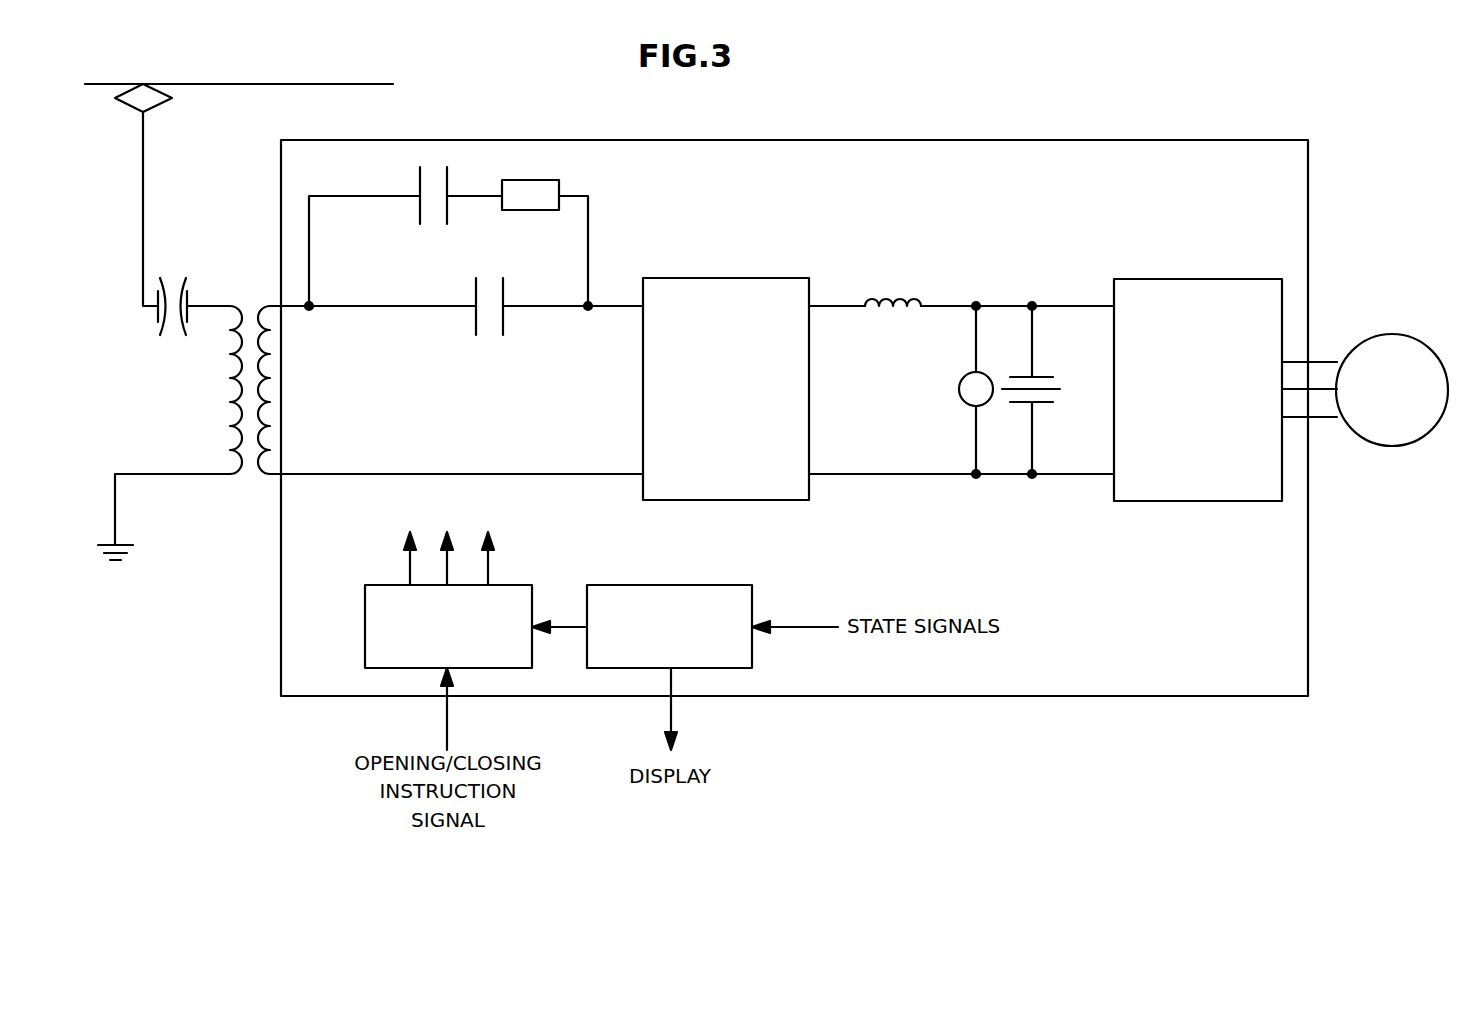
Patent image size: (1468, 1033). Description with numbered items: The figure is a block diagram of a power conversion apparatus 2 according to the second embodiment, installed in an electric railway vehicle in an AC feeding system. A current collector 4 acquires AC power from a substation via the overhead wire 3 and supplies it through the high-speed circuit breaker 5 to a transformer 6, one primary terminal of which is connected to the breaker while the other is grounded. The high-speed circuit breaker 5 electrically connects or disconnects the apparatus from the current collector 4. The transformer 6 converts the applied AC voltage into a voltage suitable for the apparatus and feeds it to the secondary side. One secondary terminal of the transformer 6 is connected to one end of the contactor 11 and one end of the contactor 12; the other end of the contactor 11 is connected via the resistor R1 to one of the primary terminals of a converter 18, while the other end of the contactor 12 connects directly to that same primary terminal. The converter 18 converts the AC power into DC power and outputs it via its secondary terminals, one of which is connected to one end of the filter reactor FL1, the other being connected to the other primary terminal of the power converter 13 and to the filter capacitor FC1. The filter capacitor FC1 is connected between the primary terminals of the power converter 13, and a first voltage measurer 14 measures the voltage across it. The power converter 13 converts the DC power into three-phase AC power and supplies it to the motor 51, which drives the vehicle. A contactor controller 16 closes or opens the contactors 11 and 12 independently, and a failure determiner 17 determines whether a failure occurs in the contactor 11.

The power conversion apparatus 2 is at (760, 140).
The overhead wire 3 is at (366, 85).
The current collector 4 is at (152, 110).
The high-speed circuit breaker 5 is at (157, 320).
The transformer 6 is at (250, 480).
The contactor 11 is at (420, 210).
The resistor R1 is at (549, 210).
The contactor 12 is at (476, 320).
The converter 18 is at (728, 278).
The filter reactor FL1 is at (920, 302).
The first voltage measurer 14 is at (962, 403).
The filter capacitor FC1 is at (1037, 377).
The power converter 13 is at (1140, 501).
The motor 51 is at (1392, 335).
The contactor controller 16 is at (365, 610).
The failure determiner 17 is at (695, 585).